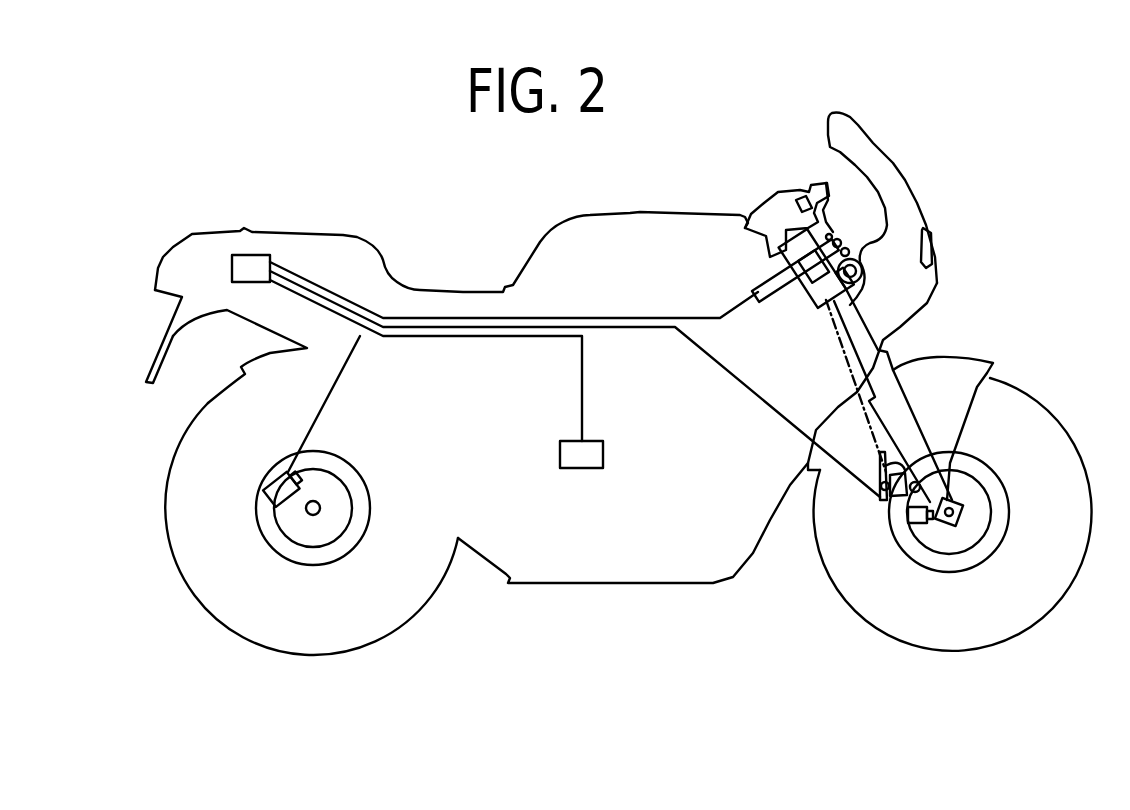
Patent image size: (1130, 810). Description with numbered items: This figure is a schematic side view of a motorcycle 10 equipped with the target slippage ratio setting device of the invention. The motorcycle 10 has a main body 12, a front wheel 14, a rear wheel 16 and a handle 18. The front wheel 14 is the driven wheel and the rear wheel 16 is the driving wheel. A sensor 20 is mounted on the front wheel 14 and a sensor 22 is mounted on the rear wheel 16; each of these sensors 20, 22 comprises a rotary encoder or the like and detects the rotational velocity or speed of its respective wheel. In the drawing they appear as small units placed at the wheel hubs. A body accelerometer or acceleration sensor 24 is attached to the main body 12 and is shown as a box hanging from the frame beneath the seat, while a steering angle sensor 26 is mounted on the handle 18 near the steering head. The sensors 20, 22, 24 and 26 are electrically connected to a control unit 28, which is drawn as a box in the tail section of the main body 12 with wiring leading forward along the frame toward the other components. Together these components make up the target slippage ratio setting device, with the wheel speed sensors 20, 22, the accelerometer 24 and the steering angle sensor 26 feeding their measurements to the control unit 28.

The motorcycle 10 is at (414, 208).
The main body 12 is at (568, 212).
The front wheel 14 is at (1042, 402).
The rear wheel 16 is at (160, 496).
The handle 18 is at (849, 236).
The sensor 20 is at (918, 526).
The sensor 22 is at (280, 488).
The body accelerometer 24 is at (603, 458).
The steering angle sensor 26 is at (803, 210).
The control unit 28 is at (255, 258).